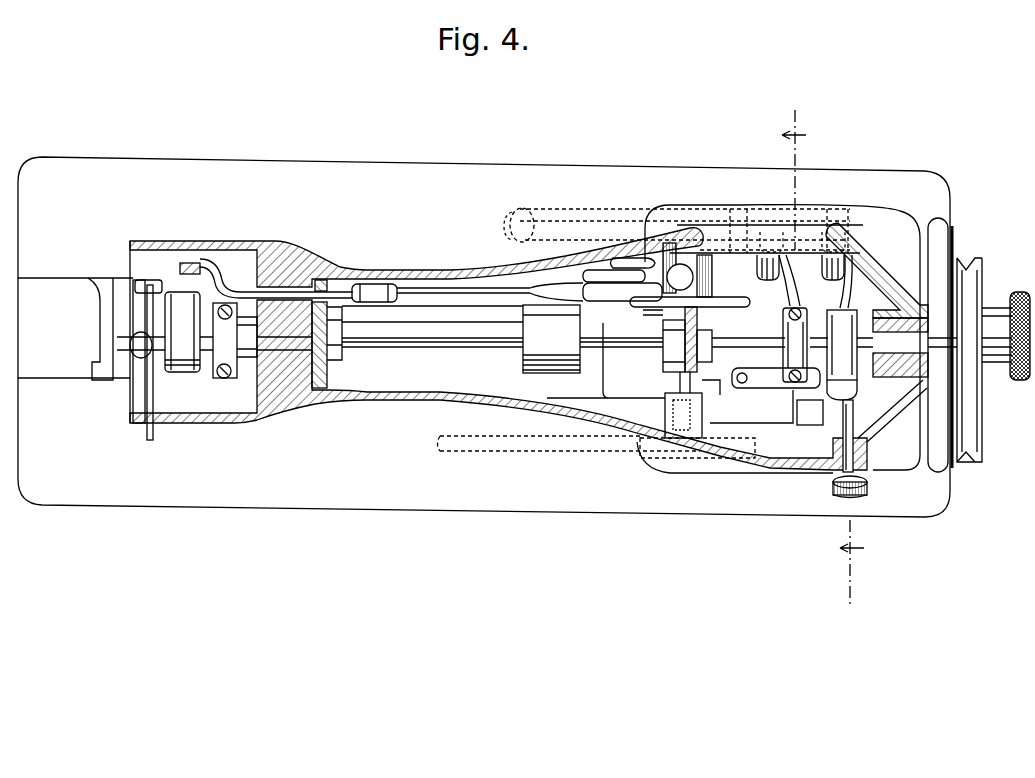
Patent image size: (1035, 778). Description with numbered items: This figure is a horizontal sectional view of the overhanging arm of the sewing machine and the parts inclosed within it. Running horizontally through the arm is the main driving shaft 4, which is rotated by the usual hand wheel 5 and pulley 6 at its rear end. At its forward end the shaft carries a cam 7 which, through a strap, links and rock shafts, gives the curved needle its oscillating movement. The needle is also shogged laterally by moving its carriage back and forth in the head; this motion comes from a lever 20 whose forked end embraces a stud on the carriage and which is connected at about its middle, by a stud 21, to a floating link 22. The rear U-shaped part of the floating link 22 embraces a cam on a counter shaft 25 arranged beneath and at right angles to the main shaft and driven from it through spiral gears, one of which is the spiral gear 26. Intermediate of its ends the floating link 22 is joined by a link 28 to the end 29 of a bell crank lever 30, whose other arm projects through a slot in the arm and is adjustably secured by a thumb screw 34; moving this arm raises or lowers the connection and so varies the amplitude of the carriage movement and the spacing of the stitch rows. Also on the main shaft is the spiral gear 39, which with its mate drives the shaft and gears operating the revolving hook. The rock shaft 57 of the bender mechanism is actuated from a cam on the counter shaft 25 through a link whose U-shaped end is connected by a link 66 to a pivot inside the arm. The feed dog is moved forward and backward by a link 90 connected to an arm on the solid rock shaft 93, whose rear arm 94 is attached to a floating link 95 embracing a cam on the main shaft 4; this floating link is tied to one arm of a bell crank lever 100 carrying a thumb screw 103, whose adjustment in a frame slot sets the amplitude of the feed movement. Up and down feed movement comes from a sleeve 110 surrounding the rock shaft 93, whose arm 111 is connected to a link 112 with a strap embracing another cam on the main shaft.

The main driving shaft 4 is at (458, 348).
The hand wheel 5 is at (957, 237).
The pulley 6 is at (978, 264).
The cam 7 is at (238, 364).
The lever 20 is at (185, 284).
The stud 21 is at (186, 256).
The floating link 22 is at (498, 294).
The counter shaft 25 is at (700, 392).
The spiral gear 26 is at (705, 342).
The link 28 is at (583, 291).
The end of bell crank lever 29 is at (583, 277).
The bell crank lever 30 is at (613, 263).
The thumb screw 34 is at (688, 279).
The spiral gear 39 is at (330, 365).
The rock shaft 57 is at (460, 445).
The link 66 is at (775, 378).
The link 90 is at (92, 297).
The solid rock shaft 93 is at (520, 212).
The arm 94 is at (800, 290).
The floating link 95 is at (848, 295).
The bell crank lever 100 is at (855, 392).
The thumb screw 103 is at (868, 490).
The sleeve 110 is at (590, 208).
The arm 111 is at (768, 280).
The link 112 is at (794, 291).